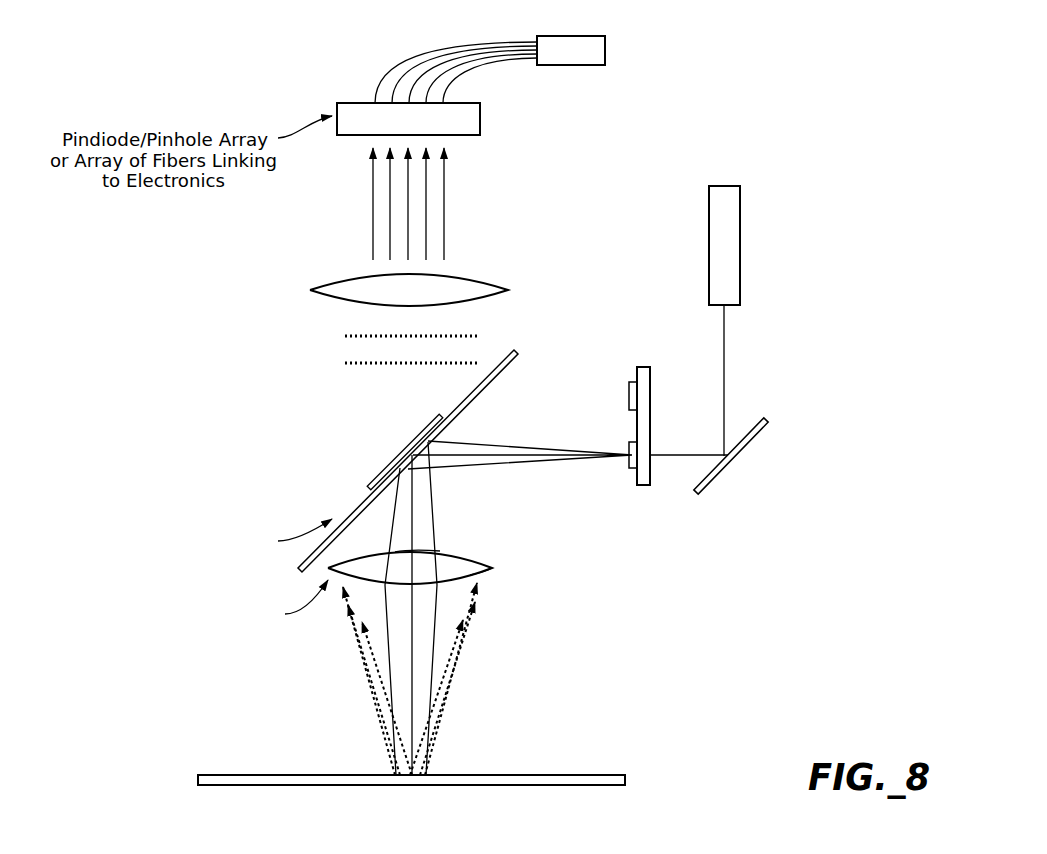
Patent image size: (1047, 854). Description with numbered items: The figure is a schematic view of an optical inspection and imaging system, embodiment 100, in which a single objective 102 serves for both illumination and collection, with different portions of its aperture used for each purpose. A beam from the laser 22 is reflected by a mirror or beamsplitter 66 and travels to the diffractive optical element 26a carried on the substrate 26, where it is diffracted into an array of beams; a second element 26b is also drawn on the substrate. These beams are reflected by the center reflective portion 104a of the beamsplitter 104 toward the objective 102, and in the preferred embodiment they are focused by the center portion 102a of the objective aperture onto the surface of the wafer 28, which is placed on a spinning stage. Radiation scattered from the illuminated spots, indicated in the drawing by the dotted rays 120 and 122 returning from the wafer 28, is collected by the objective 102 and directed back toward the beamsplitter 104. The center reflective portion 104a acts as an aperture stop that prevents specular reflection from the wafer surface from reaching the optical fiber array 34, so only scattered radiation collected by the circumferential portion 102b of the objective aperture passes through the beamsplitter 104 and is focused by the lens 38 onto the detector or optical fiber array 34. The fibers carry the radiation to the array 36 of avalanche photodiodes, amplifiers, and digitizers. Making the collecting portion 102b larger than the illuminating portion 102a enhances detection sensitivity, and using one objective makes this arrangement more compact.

The embodiment 100 is at (650, 114).
The laser 22 is at (742, 222).
The substrate 26 is at (645, 492).
The diffractive optical element 26a is at (629, 466).
The diffractive optical element portion 26b is at (629, 395).
The wafer 28 is at (528, 768).
The optical fiber array 34 is at (452, 62).
The array of avalanche photodiodes, amplifiers, and digitizers 36 is at (548, 66).
The lens 38 is at (493, 283).
The mirror or beamsplitter 66 is at (752, 449).
The objective 102 is at (479, 553).
The center portion 102a is at (452, 552).
The circumferential portion 102b is at (492, 569).
The beamsplitter 104 is at (495, 385).
The center reflective portion 104a is at (400, 465).
The scattered light 120 is at (350, 658).
The scattered light 122 is at (472, 660).